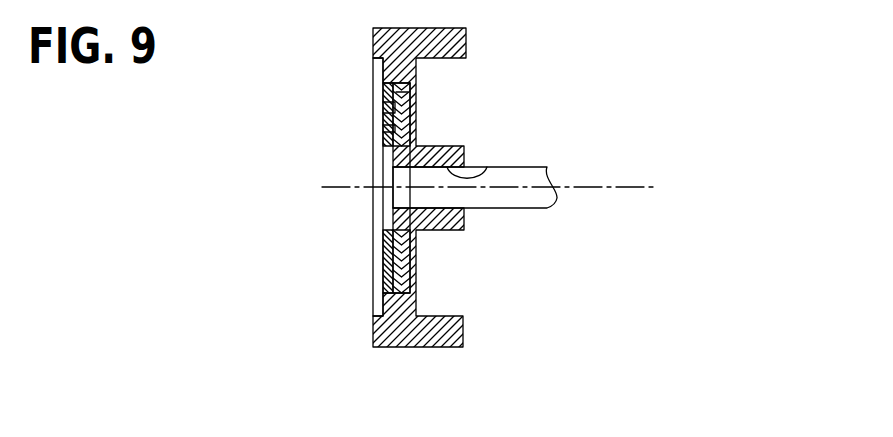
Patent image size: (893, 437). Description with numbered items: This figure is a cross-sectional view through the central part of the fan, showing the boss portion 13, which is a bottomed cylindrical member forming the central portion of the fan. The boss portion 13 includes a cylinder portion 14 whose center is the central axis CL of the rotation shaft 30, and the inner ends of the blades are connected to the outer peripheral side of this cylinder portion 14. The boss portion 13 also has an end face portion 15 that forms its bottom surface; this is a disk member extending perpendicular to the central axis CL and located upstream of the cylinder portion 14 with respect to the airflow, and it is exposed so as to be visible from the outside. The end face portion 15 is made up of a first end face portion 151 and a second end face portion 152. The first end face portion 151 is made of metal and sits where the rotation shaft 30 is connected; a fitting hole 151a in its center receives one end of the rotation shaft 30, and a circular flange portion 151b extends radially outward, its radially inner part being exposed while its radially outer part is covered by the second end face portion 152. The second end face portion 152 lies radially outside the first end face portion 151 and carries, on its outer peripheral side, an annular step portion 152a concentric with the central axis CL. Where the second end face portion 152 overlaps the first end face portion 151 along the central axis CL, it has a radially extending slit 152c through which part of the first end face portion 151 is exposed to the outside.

The boss portion 13 is at (358, 338).
The cylinder portion 14 is at (463, 330).
The end face portion 15 is at (388, 183).
The rotation shaft 30 is at (545, 164).
The first end face portion 151 is at (436, 175).
The fitting hole 151a is at (487, 167).
The flange portion 151b is at (403, 92).
The second end face portion 152 is at (388, 190).
The step portion 152a is at (377, 66).
The slit 152c is at (390, 110).
The central axis CL is at (653, 187).